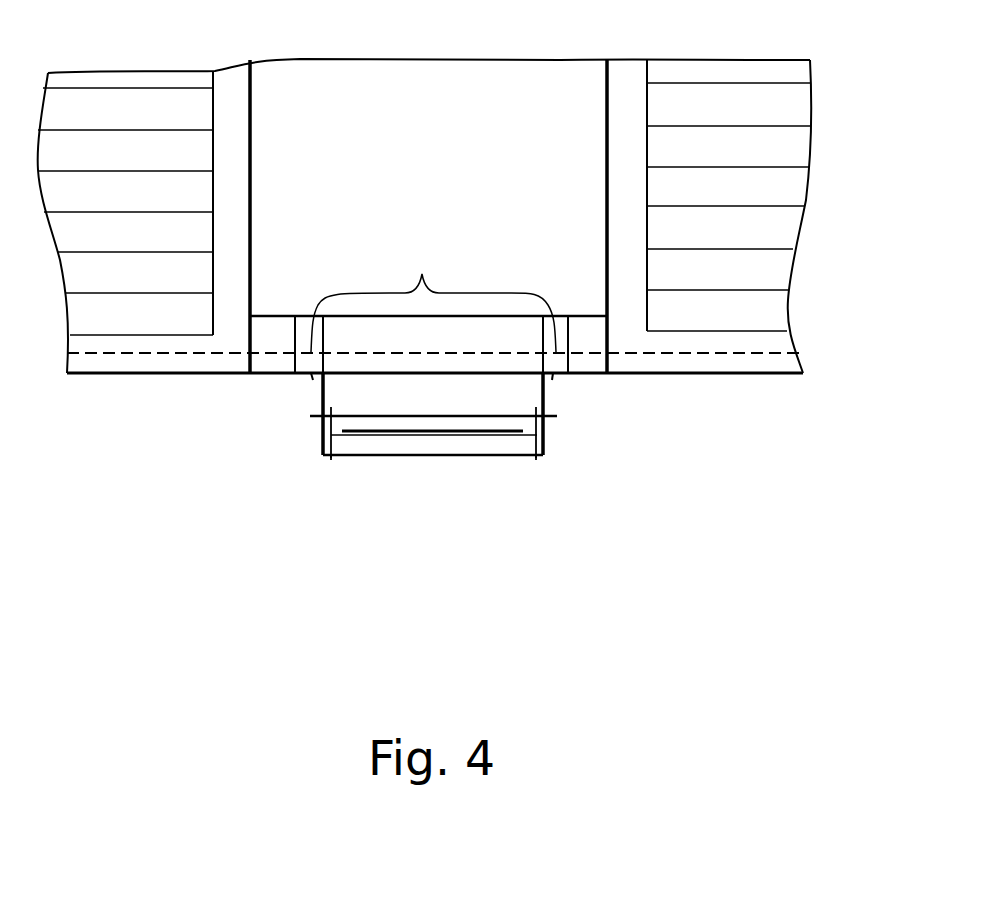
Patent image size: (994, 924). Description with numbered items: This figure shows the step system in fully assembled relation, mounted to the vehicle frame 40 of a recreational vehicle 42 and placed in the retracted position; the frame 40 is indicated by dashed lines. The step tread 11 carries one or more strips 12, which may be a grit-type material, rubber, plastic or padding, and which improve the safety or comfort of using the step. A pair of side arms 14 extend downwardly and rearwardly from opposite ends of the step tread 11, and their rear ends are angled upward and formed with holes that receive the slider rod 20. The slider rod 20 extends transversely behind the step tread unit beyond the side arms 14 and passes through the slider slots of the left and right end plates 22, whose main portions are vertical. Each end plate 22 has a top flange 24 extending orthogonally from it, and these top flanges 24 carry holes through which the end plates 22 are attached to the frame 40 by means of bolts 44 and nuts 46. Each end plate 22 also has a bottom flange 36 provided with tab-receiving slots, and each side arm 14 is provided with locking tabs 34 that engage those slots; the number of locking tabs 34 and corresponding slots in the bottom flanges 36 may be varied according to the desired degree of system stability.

The step tread 11 is at (428, 440).
The strips 12 is at (448, 433).
The side arms 14 is at (331, 408).
The slider rod 20 is at (445, 414).
The end plates 22 is at (320, 430).
The top flange 24 is at (297, 375).
The locking tabs 34 is at (329, 460).
The bottom flange 36 is at (345, 458).
The vehicle frame 40 is at (158, 365).
The recreational vehicle 42 is at (762, 147).
The bolts 44 is at (312, 376).
The nuts 46 is at (433, 297).